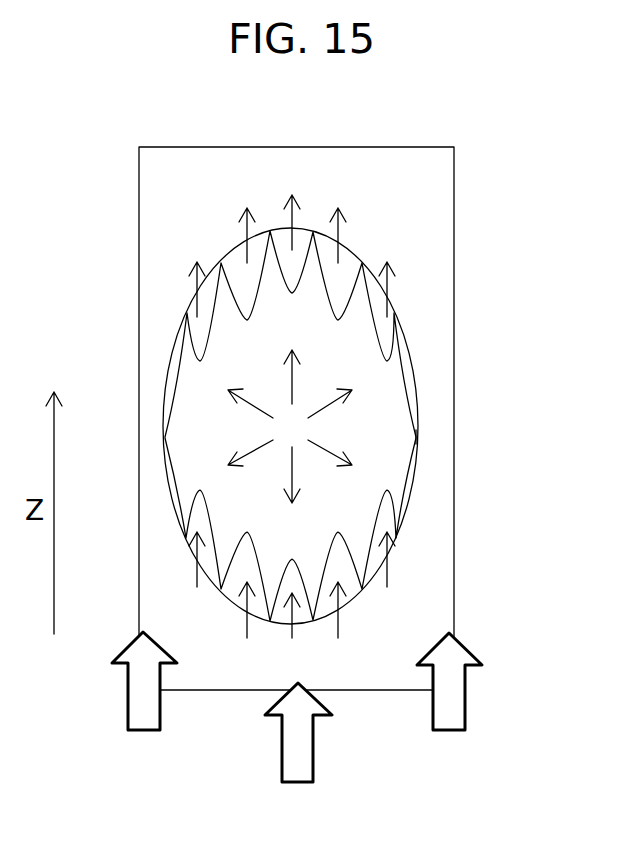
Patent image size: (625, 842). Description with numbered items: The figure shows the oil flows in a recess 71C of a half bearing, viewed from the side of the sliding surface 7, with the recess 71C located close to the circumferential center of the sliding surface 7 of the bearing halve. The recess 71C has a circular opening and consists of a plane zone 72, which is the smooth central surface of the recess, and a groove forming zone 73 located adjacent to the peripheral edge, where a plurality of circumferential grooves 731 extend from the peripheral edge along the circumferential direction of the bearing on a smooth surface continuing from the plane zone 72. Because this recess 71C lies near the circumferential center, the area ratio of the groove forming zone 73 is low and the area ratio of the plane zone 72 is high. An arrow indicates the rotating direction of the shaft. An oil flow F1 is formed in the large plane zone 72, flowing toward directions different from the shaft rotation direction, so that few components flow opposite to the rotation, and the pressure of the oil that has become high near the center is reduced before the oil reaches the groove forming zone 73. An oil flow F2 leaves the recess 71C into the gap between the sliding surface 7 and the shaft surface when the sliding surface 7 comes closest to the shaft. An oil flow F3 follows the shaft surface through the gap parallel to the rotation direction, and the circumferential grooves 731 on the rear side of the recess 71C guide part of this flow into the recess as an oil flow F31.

The sliding surface 7 is at (197, 228).
The plane zone 72 is at (243, 422).
The circumferential grooves 731 is at (192, 337).
The groove forming zone 73 is at (240, 573).
The recess 71C is at (420, 405).
The oil flow F1 is at (356, 461).
The oil flow F2 is at (322, 232).
The oil flow F31 is at (388, 572).
The oil flow F3 is at (450, 693).